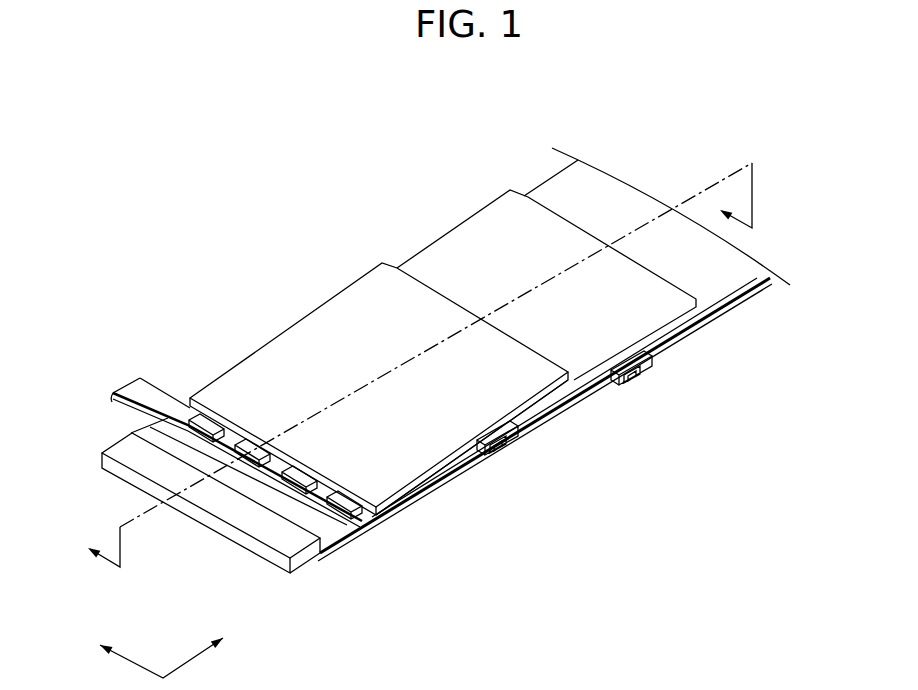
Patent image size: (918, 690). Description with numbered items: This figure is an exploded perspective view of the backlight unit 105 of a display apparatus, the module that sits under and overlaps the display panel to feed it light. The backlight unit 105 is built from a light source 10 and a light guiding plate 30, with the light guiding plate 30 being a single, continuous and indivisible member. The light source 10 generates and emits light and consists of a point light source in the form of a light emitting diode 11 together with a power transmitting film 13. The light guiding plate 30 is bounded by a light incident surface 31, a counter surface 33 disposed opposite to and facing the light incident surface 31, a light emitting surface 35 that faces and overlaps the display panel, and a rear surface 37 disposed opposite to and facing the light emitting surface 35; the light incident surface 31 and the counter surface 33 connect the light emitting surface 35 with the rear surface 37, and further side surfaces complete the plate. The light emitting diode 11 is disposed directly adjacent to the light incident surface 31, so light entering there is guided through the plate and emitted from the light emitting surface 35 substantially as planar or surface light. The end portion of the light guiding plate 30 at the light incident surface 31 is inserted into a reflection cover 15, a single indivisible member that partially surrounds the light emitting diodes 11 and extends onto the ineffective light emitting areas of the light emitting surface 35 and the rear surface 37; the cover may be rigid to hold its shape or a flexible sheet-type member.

The backlight unit 105 is at (421, 160).
The light source 10 is at (424, 583).
The light emitting diode 11 is at (362, 522).
The power transmitting film 13 is at (366, 517).
The reflection cover 15 is at (299, 557).
The light guiding plate 30 is at (656, 448).
The light incident surface 31 is at (380, 508).
The counter surface 33 is at (612, 386).
The light emitting surface 35 is at (420, 460).
The rear surface 37 is at (458, 455).